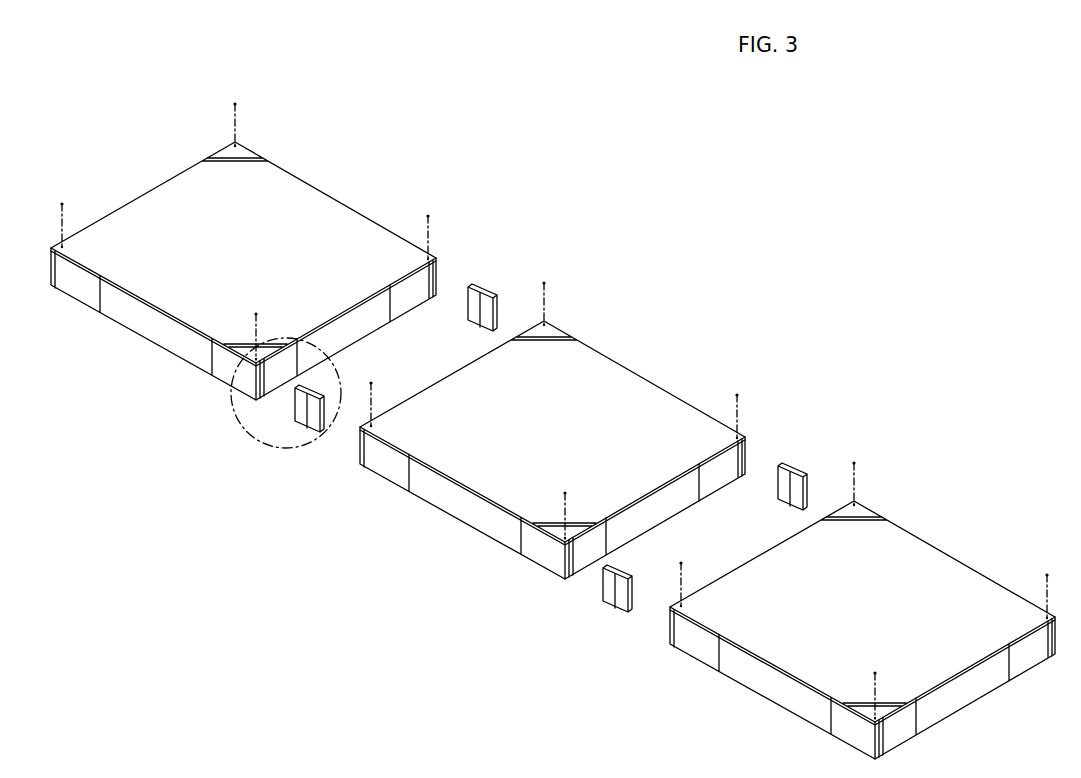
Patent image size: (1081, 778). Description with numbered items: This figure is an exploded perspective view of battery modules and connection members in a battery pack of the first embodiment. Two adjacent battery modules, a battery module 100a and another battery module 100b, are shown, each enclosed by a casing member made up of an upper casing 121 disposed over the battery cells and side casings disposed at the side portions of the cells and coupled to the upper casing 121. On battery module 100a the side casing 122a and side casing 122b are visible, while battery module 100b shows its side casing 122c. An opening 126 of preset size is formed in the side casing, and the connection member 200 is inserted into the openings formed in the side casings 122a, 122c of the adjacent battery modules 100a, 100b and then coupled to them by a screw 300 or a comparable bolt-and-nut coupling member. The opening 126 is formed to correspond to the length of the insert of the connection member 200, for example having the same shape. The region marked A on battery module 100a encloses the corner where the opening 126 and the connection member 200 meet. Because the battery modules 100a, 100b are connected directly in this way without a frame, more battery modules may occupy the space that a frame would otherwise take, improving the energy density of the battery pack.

The battery module 100a is at (254, 293).
The battery module 100b is at (552, 430).
The upper casing 121 is at (320, 203).
The side casing 122a is at (130, 318).
The side casing 122b is at (357, 333).
The side casing 122c is at (440, 497).
The opening 126 is at (261, 400).
The connection member 200 is at (310, 443).
The screw 300 is at (431, 213).
The detail region A is at (242, 428).